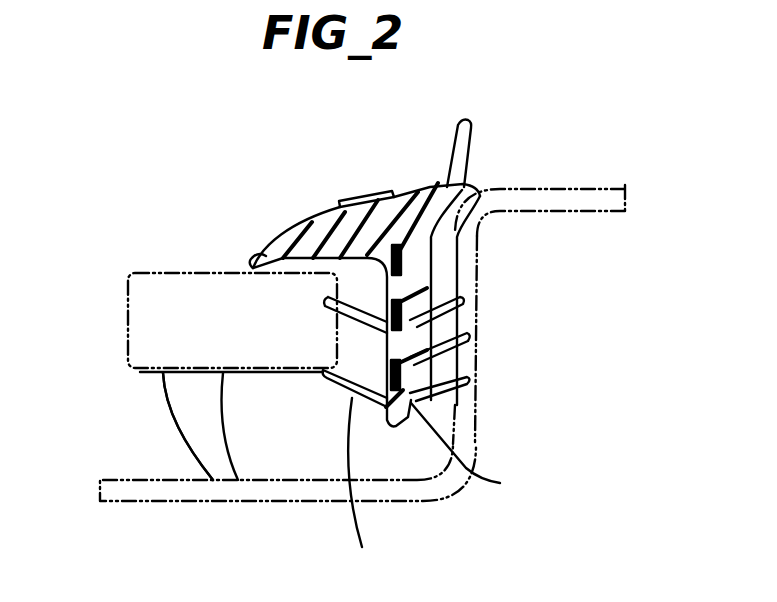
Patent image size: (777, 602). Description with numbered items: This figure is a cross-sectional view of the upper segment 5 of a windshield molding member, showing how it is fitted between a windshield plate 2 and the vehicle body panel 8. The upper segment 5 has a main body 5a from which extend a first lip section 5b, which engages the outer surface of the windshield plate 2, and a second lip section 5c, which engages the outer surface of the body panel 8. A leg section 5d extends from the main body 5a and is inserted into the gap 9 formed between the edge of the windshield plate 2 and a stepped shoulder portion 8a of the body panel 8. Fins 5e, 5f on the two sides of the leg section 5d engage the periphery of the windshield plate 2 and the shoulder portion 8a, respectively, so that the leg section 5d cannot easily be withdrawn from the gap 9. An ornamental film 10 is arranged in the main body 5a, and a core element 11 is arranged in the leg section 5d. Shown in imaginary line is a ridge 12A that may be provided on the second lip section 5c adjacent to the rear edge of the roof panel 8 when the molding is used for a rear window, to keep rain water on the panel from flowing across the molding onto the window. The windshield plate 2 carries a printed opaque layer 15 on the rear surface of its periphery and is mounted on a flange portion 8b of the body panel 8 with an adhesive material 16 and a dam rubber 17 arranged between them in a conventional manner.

The windshield plate 2 is at (140, 330).
The upper segment 5 is at (392, 193).
The main body 5a is at (410, 190).
The first lip section 5b is at (268, 255).
The second lip section 5c is at (476, 185).
The leg section 5d is at (411, 425).
The fin 5e is at (362, 491).
The fin 5f is at (433, 397).
The vehicle body panel 8 is at (585, 185).
The stepped shoulder portion 8a is at (477, 347).
The flange portion 8b is at (252, 503).
The gap 9 is at (443, 275).
The ornamental film 10 is at (358, 207).
The core element 11 is at (476, 450).
The ridge 12A is at (468, 118).
The printed opaque layer 15 is at (155, 374).
The adhesive material 16 is at (306, 456).
The dam rubber 17 is at (178, 418).